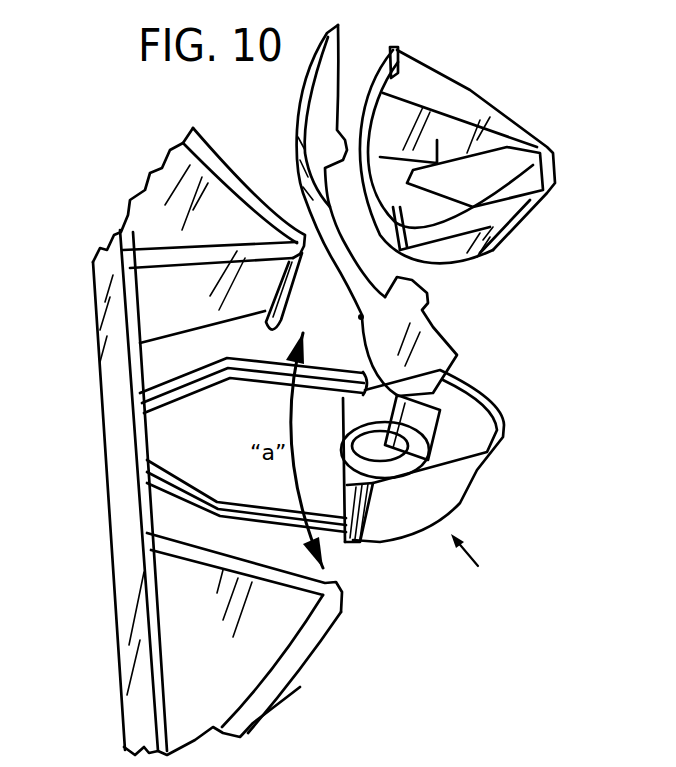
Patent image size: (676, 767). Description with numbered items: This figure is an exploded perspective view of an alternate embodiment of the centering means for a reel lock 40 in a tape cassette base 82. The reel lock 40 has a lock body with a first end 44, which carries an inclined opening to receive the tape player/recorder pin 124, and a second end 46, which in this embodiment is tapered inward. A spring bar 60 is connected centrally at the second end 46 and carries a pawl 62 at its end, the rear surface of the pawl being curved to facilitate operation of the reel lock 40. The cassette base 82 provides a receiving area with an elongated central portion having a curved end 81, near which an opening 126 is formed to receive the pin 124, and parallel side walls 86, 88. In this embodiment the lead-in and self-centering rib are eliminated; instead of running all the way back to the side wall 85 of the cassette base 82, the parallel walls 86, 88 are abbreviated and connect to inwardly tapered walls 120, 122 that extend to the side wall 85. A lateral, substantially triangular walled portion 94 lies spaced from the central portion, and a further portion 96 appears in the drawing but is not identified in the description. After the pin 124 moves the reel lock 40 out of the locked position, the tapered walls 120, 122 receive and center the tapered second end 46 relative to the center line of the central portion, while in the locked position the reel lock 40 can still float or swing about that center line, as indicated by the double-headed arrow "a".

The reel lock 40 is at (503, 192).
The first end 44 is at (557, 148).
The second end 46 is at (343, 125).
The spring bar 60 is at (302, 100).
The pawl 62 is at (412, 290).
The curved end 81 is at (458, 484).
The cassette base 82 is at (483, 563).
The side wall 85 is at (93, 438).
The parallel side wall 86 is at (252, 378).
The parallel side wall 88 is at (258, 518).
The lateral triangular walled portion 94 is at (285, 672).
The upper wing 96 is at (155, 197).
The inwardly tapered wall 120 is at (172, 378).
The inwardly tapered wall 122 is at (184, 482).
The tape player/recorder pin 124 is at (438, 414).
The opening 126 is at (366, 428).